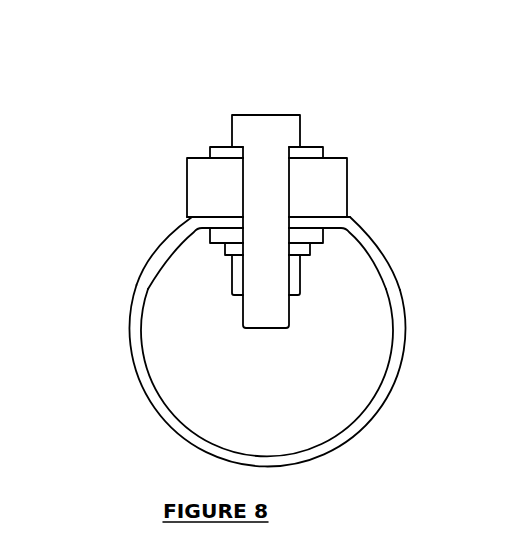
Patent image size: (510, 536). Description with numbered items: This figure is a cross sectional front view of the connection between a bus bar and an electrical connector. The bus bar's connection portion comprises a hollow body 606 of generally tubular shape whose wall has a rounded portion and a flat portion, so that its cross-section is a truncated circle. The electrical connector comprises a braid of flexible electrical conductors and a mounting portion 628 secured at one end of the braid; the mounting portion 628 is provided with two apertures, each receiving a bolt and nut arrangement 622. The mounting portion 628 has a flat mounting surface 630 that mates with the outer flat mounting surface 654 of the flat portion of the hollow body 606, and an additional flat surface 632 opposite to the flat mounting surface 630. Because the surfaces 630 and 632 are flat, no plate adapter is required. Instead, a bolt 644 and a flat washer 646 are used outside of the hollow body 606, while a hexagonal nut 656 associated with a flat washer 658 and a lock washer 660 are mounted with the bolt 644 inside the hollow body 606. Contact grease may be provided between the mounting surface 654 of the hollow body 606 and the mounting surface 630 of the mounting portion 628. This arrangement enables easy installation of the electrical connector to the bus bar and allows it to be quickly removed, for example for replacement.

The hollow body 606 is at (399, 377).
The bolt and nut arrangement 622 is at (273, 69).
The mounting portion 628 is at (350, 168).
The flat mounting surface 630 is at (200, 230).
The additional flat surface 632 is at (200, 158).
The bolt 644 is at (303, 116).
The flat washer 646 is at (326, 147).
The mounting surface 654 is at (212, 217).
The hexagonal nut 656 is at (303, 287).
The flat washer 658 is at (326, 243).
The lock washer 660 is at (311, 257).